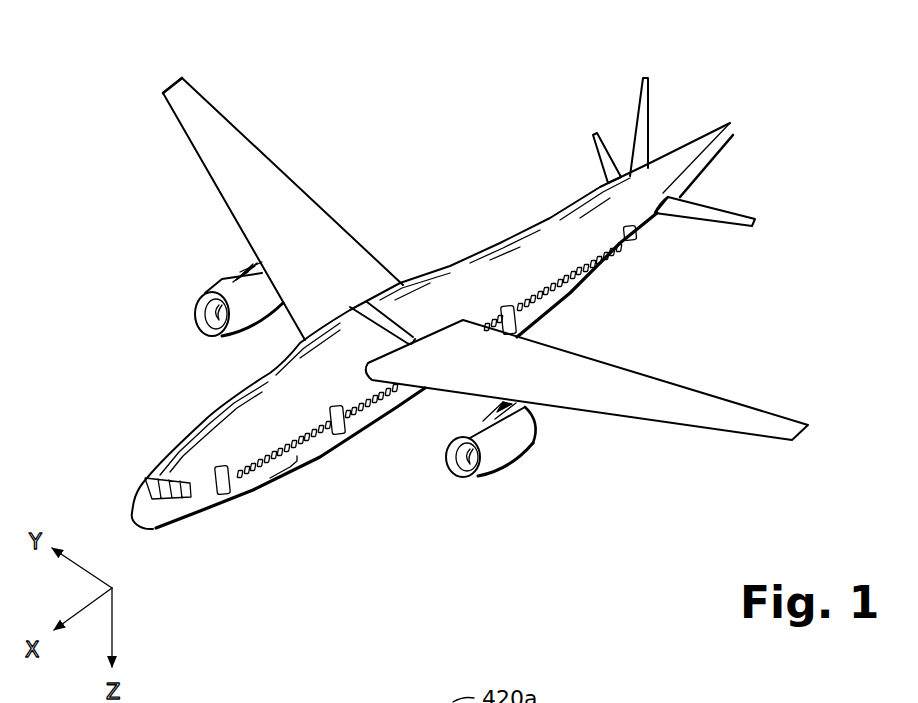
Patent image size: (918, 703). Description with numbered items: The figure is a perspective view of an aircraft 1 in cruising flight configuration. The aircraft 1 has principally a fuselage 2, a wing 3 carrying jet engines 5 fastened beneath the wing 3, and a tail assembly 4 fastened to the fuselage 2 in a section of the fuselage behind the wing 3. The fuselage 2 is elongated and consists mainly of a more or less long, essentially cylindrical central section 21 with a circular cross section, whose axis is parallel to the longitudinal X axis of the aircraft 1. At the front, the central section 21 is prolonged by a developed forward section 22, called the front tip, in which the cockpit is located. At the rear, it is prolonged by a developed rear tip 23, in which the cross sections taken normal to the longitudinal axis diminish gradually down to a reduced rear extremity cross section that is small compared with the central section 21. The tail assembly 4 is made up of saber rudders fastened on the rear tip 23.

The aircraft 1 is at (382, 119).
The fuselage 2 is at (326, 461).
The wing 3 is at (339, 210).
The tail assembly 4 is at (716, 238).
The jet engines 5 is at (215, 290).
The central section 21 is at (370, 413).
The forward section (front tip) 22 is at (187, 508).
The rear tip 23 is at (607, 267).